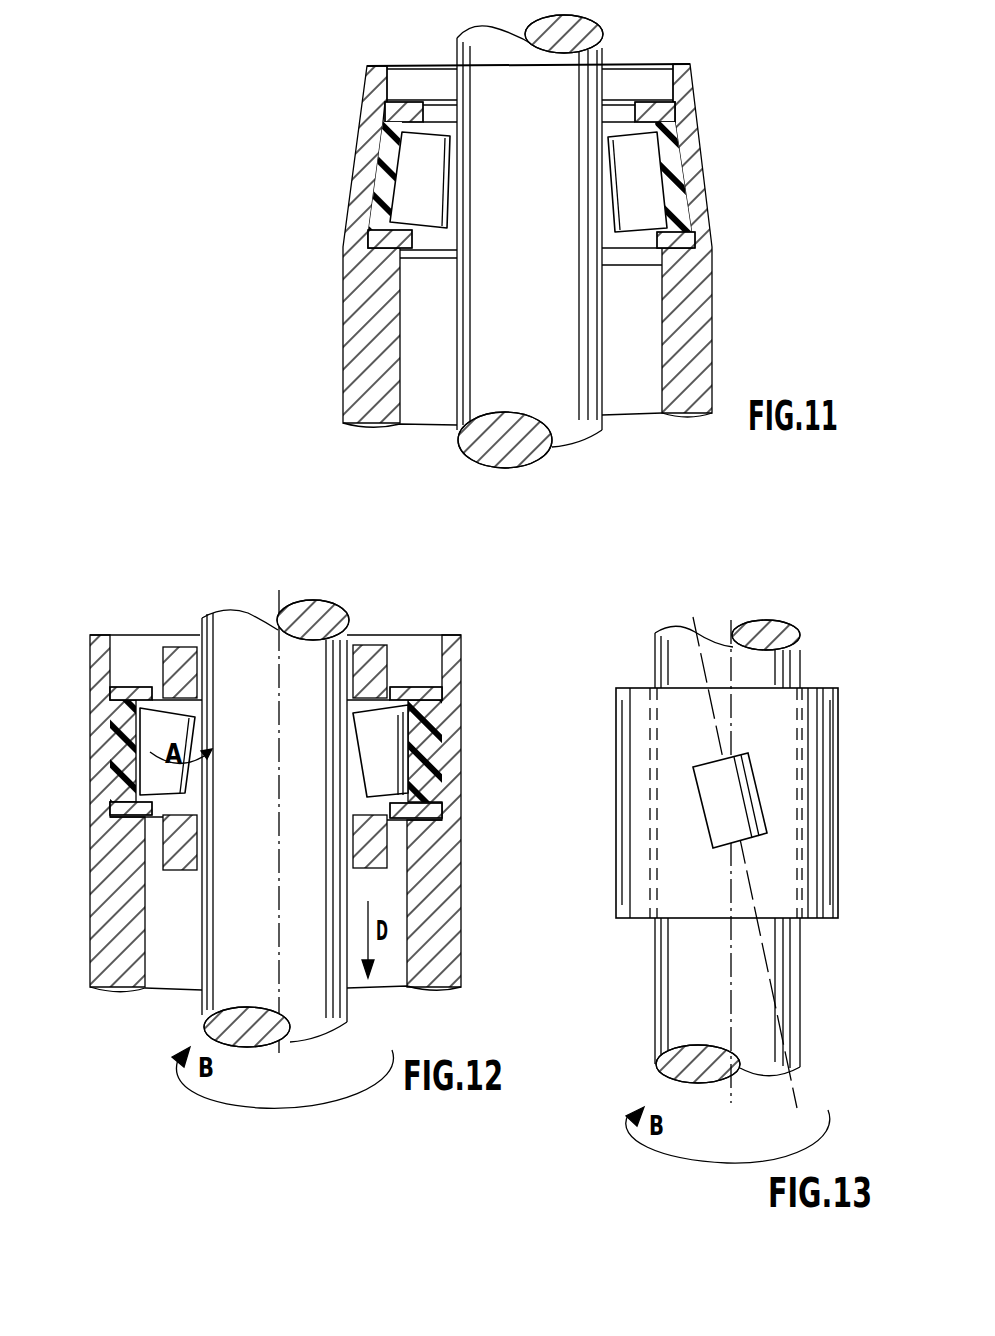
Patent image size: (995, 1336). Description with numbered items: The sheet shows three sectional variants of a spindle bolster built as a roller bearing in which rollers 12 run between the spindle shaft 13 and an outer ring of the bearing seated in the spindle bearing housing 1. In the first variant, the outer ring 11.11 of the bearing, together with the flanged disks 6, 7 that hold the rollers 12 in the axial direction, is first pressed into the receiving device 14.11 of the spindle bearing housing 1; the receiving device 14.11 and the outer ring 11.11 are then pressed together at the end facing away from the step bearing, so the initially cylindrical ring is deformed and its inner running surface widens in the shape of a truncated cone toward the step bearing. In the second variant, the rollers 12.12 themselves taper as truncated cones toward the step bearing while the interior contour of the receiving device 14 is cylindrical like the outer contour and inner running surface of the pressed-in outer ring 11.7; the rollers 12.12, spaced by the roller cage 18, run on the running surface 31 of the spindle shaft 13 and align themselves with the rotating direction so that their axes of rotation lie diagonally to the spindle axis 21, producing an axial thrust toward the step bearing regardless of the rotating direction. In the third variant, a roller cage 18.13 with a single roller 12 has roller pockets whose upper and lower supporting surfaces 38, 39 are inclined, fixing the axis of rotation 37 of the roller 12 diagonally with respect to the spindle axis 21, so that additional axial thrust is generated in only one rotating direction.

In FIG. 11, the spindle bearing housing 1 is at (700, 352).
In FIG. 11, the receiving device 14.11 is at (683, 76).
In FIG. 11, the flanged disk 6 is at (660, 113).
In FIG. 12, the flanged disk 6 is at (440, 698).
In FIG. 11, the outer ring of the bearing 11.11 is at (668, 160).
In FIG. 11, the roller 12 is at (650, 210).
In FIG. 13, the roller 12 is at (747, 810).
In FIG. 11, the flanged disk 7 is at (656, 240).
In FIG. 12, the flanged disk 7 is at (442, 808).
In FIG. 11, the spindle shaft 13 is at (568, 420).
In FIG. 12, the spindle shaft 13 is at (328, 1005).
In FIG. 13, the spindle shaft 13 is at (775, 962).
In FIG. 12, the receiving device 14 is at (453, 658).
In FIG. 12, the roller cage 18 is at (375, 660).
In FIG. 12, the outer ring of the bearing 11.7 is at (438, 750).
In FIG. 12, the roller 12.12 is at (398, 738).
In FIG. 12, the running surface of the spindle shaft 31 is at (357, 783).
In FIG. 12, the spindle axis 21 is at (284, 592).
In FIG. 13, the spindle axis 21 is at (735, 1102).
In FIG. 13, the roller cage 18.13 is at (825, 704).
In FIG. 13, the axis of rotation 37 is at (692, 622).
In FIG. 13, the upper supporting surface 38 is at (700, 758).
In FIG. 13, the lower supporting surface 39 is at (757, 840).